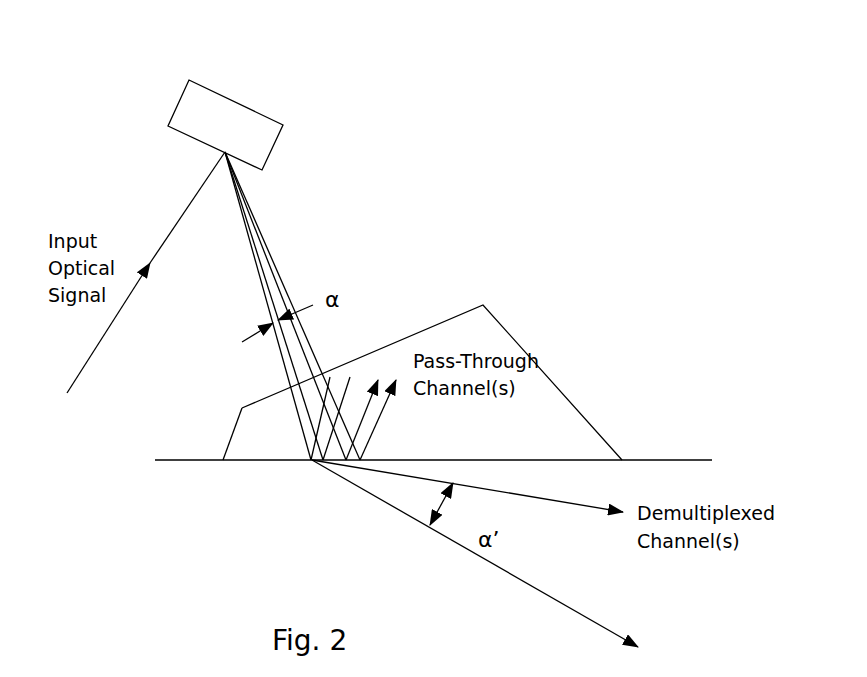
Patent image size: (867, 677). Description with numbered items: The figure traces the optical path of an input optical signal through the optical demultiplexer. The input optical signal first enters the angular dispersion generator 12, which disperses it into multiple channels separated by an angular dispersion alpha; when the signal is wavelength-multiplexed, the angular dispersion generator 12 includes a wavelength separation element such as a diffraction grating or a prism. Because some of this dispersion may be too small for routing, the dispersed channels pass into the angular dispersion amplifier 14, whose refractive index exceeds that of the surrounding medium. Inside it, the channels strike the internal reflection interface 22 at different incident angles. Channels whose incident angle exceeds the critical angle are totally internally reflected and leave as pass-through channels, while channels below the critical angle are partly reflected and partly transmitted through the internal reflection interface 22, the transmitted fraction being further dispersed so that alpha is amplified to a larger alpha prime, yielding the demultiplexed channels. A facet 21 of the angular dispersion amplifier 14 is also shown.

The angular dispersion generator 12 is at (225, 106).
The angular dispersion amplifier 14 is at (432, 382).
The prism input facet 21 is at (233, 417).
The internal reflection interface 22 is at (433, 486).